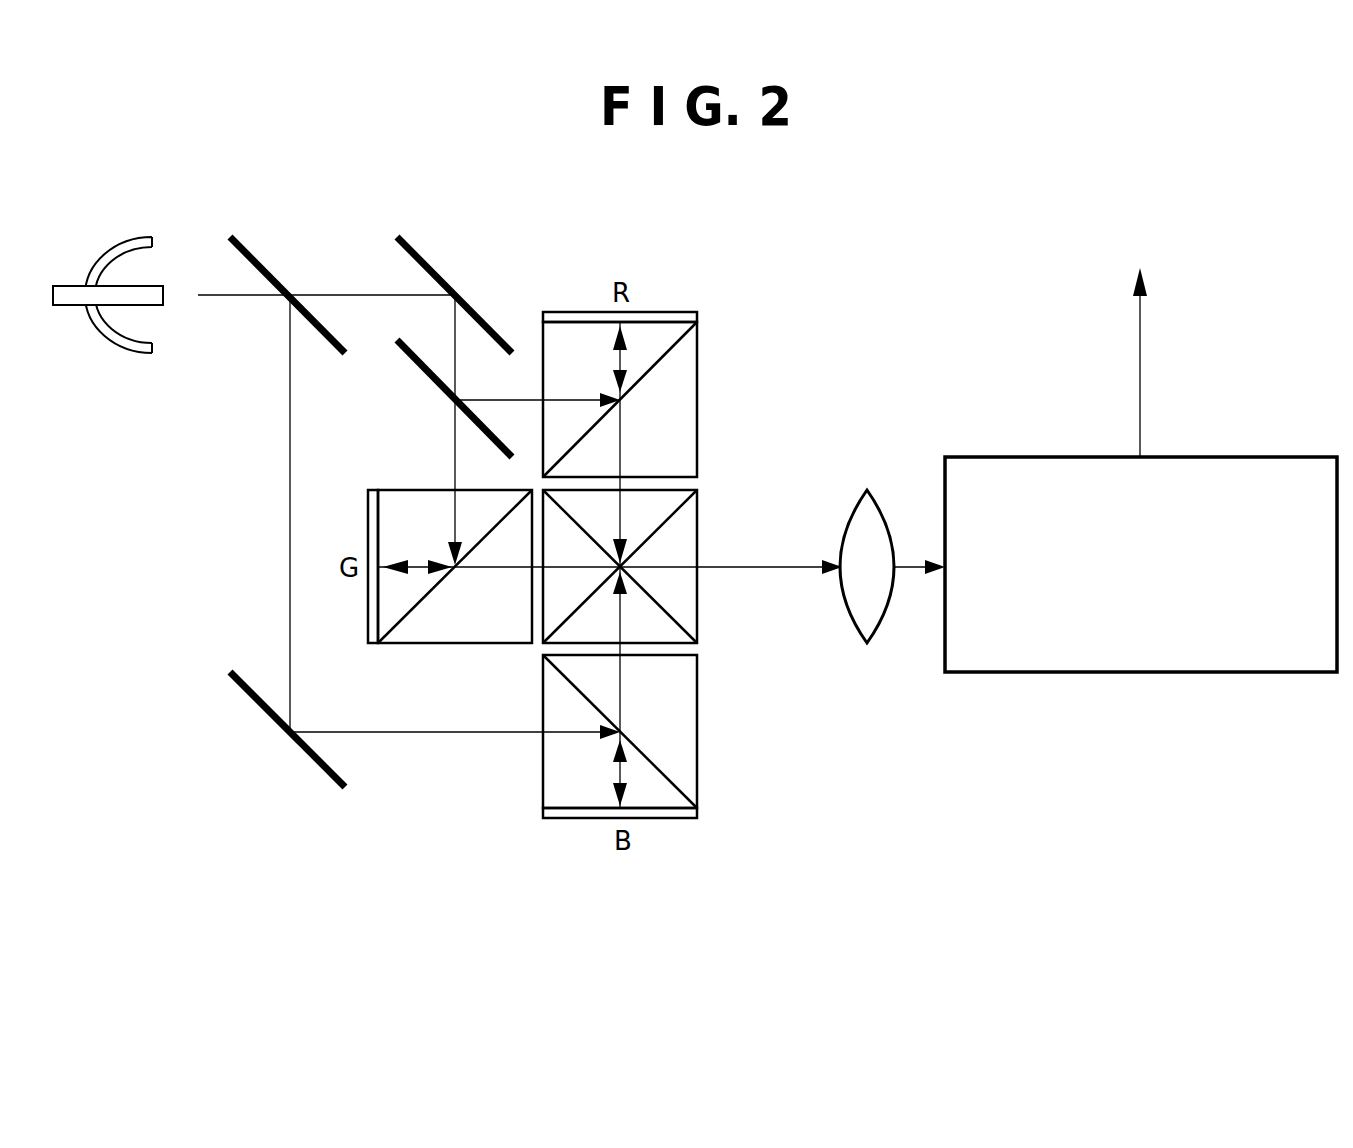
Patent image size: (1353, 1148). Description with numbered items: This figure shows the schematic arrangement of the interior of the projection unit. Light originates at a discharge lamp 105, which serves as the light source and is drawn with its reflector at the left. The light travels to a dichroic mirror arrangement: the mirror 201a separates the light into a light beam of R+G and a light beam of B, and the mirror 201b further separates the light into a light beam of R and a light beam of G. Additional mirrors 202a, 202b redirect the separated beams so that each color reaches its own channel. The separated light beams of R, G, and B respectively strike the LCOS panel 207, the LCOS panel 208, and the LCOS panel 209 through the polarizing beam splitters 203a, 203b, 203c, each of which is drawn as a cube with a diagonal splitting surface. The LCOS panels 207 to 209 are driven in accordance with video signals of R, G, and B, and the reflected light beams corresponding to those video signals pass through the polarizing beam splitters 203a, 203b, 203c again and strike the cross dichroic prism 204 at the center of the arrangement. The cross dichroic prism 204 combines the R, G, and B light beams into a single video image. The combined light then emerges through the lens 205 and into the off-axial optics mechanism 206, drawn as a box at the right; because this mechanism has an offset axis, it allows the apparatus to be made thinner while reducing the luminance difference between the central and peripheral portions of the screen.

The discharge lamp 105 is at (88, 323).
The mirror 201a is at (272, 266).
The mirror 201b is at (438, 388).
The mirror 202a is at (439, 269).
The mirror 202b is at (314, 760).
The polarizing beam splitter 203a is at (698, 350).
The polarizing beam splitter 203b is at (418, 607).
The polarizing beam splitter 203c is at (665, 765).
The cross dichroic prism 204 is at (698, 605).
The lens 205 is at (858, 510).
The off-axial optics mechanism 206 is at (1264, 457).
The LCOS panel 207 is at (667, 318).
The LCOS panel 208 is at (372, 540).
The LCOS panel 209 is at (668, 812).